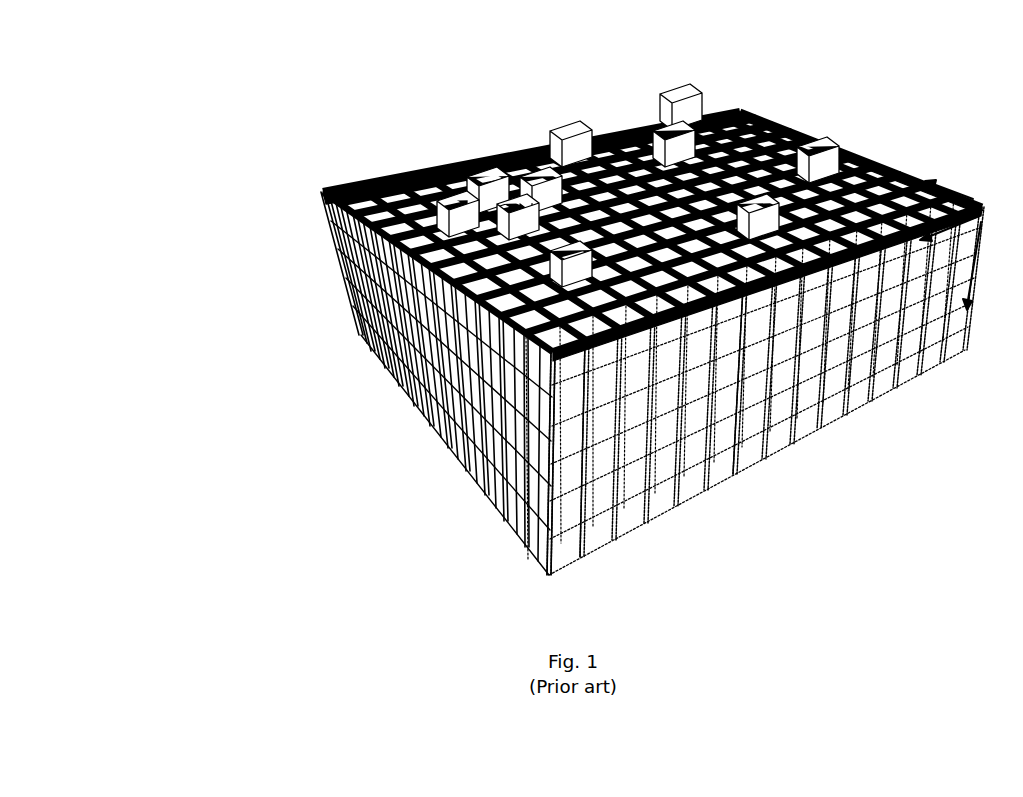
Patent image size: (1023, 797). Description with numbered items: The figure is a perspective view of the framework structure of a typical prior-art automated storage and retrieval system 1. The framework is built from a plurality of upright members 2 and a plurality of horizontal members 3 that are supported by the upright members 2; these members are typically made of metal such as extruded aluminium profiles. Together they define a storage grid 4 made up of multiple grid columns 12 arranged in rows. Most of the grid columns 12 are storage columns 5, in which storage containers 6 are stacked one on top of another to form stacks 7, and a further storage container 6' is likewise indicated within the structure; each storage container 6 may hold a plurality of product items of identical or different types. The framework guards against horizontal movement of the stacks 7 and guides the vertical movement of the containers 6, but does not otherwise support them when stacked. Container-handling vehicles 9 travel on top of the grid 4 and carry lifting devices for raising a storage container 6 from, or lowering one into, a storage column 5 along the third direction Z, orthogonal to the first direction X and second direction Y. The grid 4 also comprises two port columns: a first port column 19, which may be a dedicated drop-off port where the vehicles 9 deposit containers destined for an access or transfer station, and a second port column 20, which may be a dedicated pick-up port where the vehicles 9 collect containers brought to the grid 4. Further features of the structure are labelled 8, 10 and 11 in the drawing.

The automated storage and retrieval system 1 is at (266, 175).
The upright members 2 is at (533, 478).
The horizontal members 3 is at (488, 437).
The storage grid 4 is at (603, 127).
The storage column 5 is at (465, 401).
The storage container 6 is at (745, 296).
The storage container 6' is at (619, 407).
The stack 7 is at (577, 500).
The rail system 8 is at (532, 150).
The container-handling vehicle 9 is at (695, 102).
The first set of parallel rails 10 is at (457, 280).
The second set of parallel rails 11 is at (383, 193).
The grid column 12 is at (857, 223).
The first port column 19 is at (600, 355).
The second port column 20 is at (742, 288).